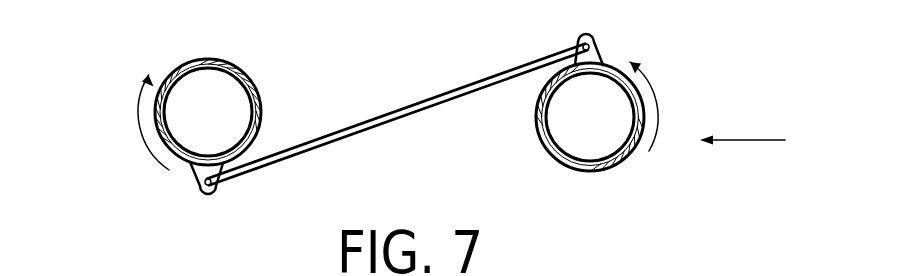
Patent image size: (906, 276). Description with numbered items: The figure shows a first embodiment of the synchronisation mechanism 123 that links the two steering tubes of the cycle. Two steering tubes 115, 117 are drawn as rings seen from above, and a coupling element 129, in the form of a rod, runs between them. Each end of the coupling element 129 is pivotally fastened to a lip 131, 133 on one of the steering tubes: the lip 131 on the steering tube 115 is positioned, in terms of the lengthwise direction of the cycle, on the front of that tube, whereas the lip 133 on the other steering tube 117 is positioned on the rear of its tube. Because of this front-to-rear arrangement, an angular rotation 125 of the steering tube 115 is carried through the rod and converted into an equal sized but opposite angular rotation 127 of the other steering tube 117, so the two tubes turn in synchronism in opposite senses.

The steering tube 115 is at (173, 73).
The steering tube 117 is at (628, 153).
The synchronisation mechanism 123 is at (765, 143).
The angular rotation 125 is at (140, 127).
The angular rotation 127 is at (658, 102).
The coupling element 129 is at (409, 111).
The lip 131 is at (192, 180).
The lip 133 is at (603, 55).